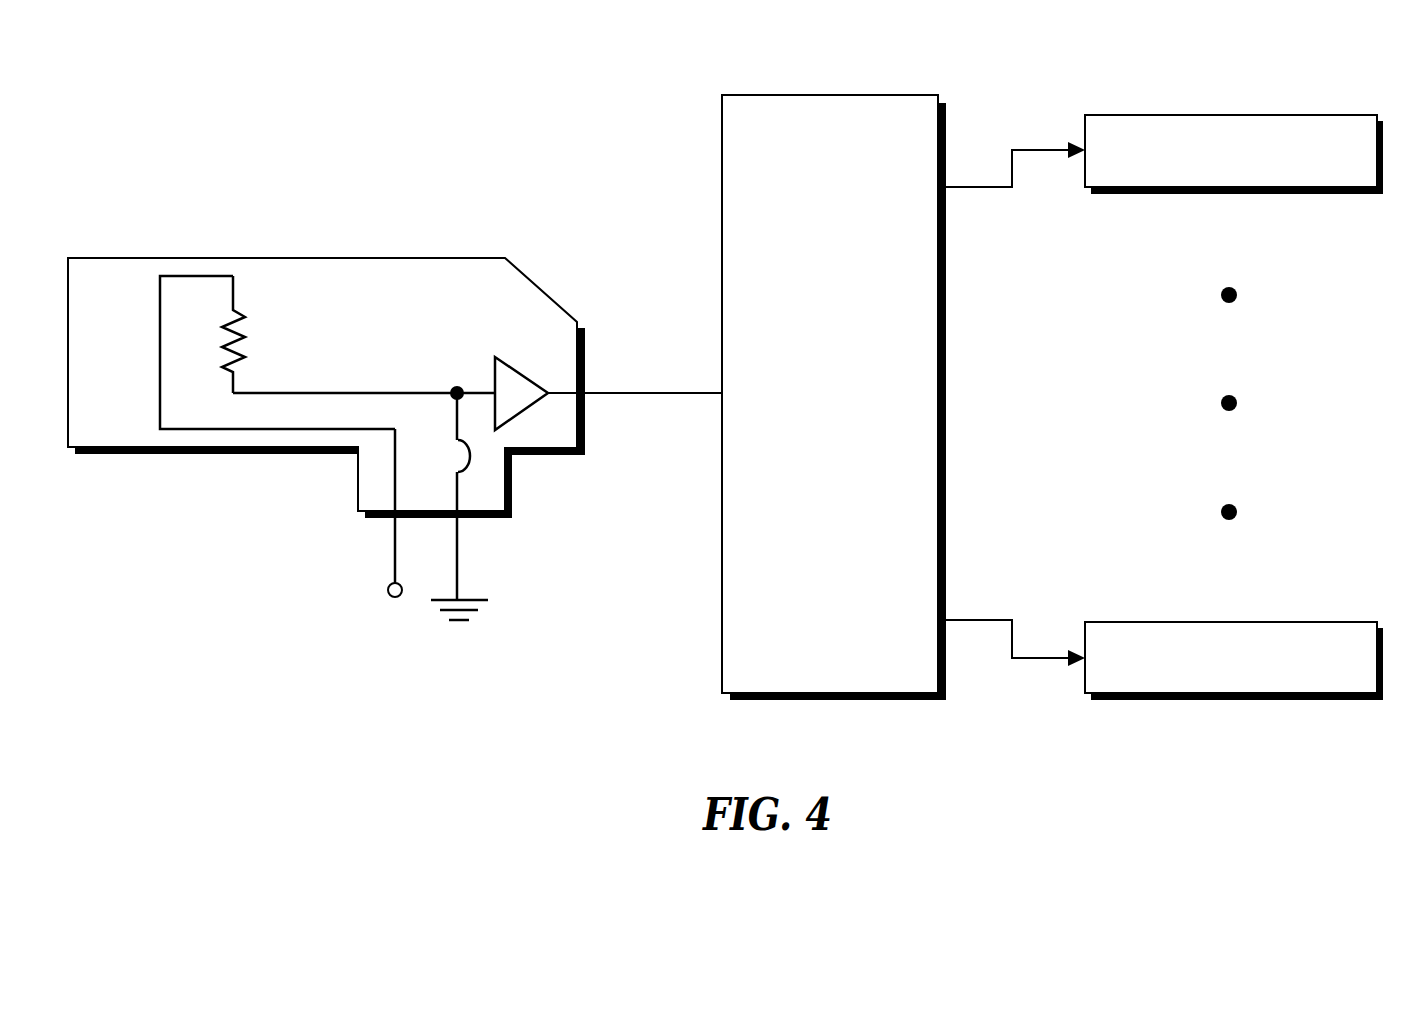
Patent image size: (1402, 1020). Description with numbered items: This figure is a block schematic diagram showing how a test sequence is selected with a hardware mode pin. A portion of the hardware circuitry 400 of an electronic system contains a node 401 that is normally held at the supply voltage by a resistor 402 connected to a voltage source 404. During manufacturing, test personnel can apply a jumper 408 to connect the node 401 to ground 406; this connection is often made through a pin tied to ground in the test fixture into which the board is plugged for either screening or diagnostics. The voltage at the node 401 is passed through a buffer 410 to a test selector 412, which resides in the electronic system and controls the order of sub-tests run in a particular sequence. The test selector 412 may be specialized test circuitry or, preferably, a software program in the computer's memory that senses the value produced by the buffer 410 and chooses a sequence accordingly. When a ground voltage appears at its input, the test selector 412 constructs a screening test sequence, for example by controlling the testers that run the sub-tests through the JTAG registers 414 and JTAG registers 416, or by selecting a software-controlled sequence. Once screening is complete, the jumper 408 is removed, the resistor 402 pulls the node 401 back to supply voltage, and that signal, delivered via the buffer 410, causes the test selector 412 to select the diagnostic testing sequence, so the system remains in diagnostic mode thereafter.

The hardware circuitry 400 is at (295, 277).
The node 401 is at (453, 390).
The resistor 402 is at (248, 330).
The voltage source 404 is at (392, 547).
The ground 406 is at (462, 547).
The jumper 408 is at (472, 458).
The buffer 410 is at (503, 385).
The test selector 412 is at (750, 222).
The JTAG registers 414 is at (1210, 132).
The JTAG registers 416 is at (1193, 640).